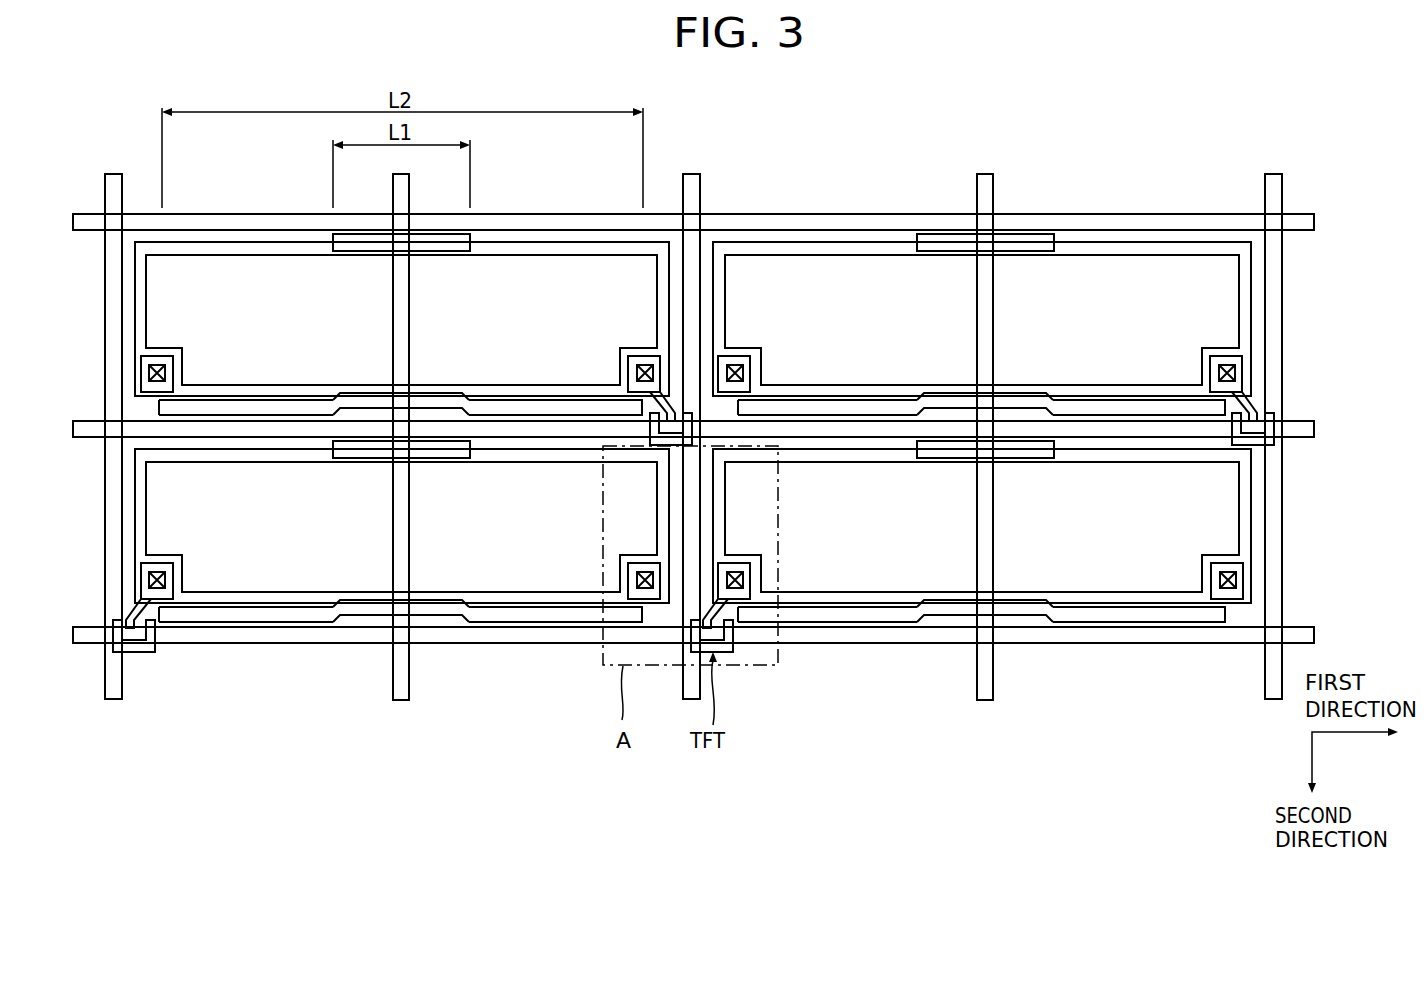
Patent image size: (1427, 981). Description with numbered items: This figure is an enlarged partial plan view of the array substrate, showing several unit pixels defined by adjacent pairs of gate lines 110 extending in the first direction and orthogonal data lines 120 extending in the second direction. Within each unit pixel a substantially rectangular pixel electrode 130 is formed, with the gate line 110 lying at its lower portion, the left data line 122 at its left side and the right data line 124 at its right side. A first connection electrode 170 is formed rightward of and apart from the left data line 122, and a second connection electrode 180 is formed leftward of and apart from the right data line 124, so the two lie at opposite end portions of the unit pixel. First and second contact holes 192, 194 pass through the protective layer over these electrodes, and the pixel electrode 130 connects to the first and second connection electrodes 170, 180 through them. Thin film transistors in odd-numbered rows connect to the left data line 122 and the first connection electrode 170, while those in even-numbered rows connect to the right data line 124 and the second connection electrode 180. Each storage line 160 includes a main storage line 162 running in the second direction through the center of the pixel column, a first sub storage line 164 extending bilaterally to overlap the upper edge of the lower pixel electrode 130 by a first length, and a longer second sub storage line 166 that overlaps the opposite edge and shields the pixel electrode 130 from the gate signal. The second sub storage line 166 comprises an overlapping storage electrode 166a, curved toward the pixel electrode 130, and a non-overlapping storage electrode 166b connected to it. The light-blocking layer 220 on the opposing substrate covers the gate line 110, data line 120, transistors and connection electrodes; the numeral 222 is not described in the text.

The gate line 110 is at (478, 637).
The data line 120 is at (1140, 120).
The left data line 122 is at (692, 192).
The right data line 124 is at (1268, 192).
The pixel electrode 130 is at (1250, 456).
The storage line 160 is at (692, 484).
The main storage line 162 is at (397, 658).
The first sub storage line 164 is at (367, 455).
The second sub storage line 166 is at (692, 539).
The overlapping storage electrode 166a is at (357, 398).
The non-overlapping storage electrode 166b is at (253, 407).
The first connection electrode 170 is at (745, 575).
The second connection electrode 180 is at (1213, 582).
The first contact hole 192 is at (737, 590).
The second contact hole 194 is at (1225, 590).
The light-blocking layer 220 is at (1087, 590).
The source electrode 222 is at (940, 556).